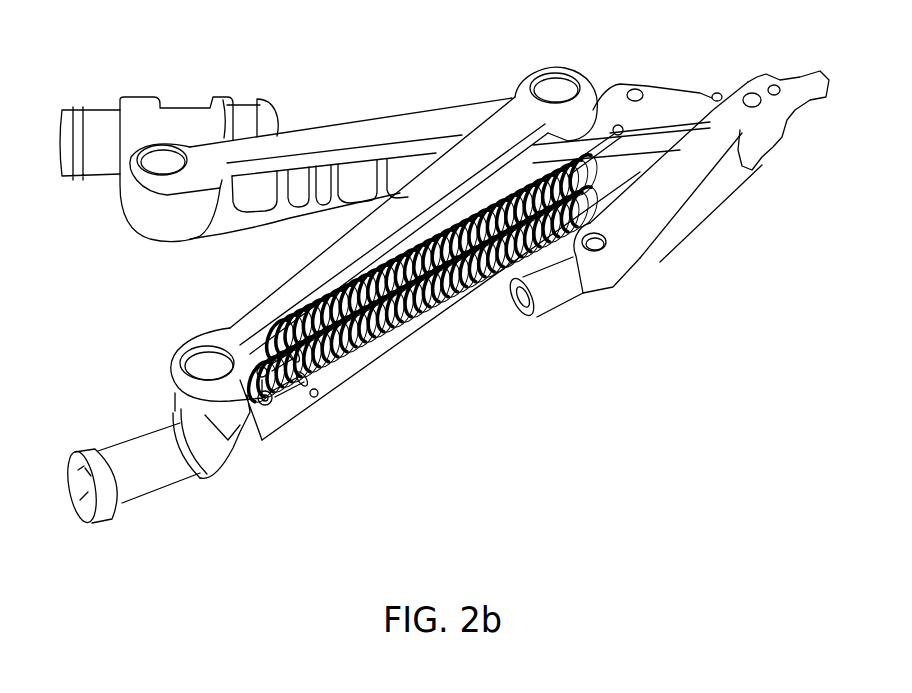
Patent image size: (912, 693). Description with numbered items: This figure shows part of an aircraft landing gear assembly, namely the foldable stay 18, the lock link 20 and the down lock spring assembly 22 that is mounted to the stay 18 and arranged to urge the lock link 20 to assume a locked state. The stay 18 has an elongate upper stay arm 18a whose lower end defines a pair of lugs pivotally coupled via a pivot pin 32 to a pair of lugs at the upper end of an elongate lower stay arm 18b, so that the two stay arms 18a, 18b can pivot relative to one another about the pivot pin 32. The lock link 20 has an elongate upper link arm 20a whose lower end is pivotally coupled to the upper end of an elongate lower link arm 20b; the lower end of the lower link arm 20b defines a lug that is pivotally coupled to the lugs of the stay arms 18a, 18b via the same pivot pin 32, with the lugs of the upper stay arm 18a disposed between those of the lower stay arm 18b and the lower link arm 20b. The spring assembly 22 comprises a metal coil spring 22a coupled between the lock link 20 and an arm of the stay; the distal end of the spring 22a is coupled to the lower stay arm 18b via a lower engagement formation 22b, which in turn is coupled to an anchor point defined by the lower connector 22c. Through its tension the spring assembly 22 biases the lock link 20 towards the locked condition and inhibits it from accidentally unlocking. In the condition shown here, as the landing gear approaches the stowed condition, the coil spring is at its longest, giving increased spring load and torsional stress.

The foldable stay 18 is at (408, 119).
The upper stay arm 18a is at (316, 135).
The lower stay arm 18b is at (246, 318).
The pivot pin 32 is at (555, 85).
The lock link 20 is at (714, 196).
The upper link arm 20a is at (667, 233).
The lower link arm 20b is at (665, 110).
The down lock spring assembly 22 is at (439, 300).
The spring 22a is at (339, 371).
The lower engagement formation 22b is at (284, 395).
The lower connector 22c is at (257, 406).